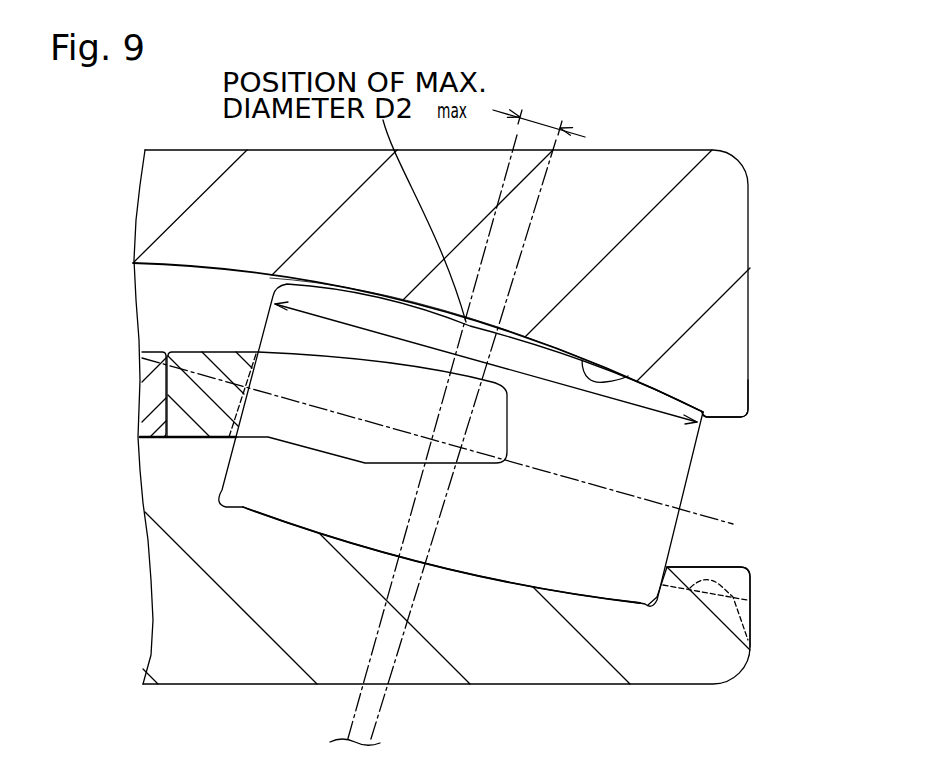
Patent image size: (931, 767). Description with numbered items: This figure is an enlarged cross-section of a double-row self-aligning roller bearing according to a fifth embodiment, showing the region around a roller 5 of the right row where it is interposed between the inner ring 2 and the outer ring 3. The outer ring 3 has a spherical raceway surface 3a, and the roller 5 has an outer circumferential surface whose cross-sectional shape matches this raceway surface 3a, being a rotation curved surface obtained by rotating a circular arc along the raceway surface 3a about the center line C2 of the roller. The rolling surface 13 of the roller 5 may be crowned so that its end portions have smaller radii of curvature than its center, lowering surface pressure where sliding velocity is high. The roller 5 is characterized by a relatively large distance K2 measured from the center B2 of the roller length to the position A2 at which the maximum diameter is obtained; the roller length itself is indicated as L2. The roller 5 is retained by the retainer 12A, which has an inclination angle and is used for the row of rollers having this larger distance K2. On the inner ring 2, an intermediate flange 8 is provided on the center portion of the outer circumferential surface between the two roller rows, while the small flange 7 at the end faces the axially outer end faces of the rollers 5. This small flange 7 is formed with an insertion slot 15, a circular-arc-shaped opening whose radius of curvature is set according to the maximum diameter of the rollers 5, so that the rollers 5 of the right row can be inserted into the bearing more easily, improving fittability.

The inner ring 2 is at (192, 673).
The outer ring 3 is at (638, 178).
The raceway surface 3a is at (628, 376).
The rollers 5 is at (657, 470).
The small flange 7 is at (742, 610).
The intermediate flange 8 is at (162, 458).
The retainer 12A is at (200, 427).
The rolling surface 13 is at (680, 392).
The insertion slot 15 is at (748, 640).
The roller length L2 is at (693, 455).
The center line C2 is at (705, 515).
The position at which the maximum diameter is obtained A2 is at (357, 700).
The center of the roller length B2 is at (380, 705).
The distance K2 is at (540, 120).